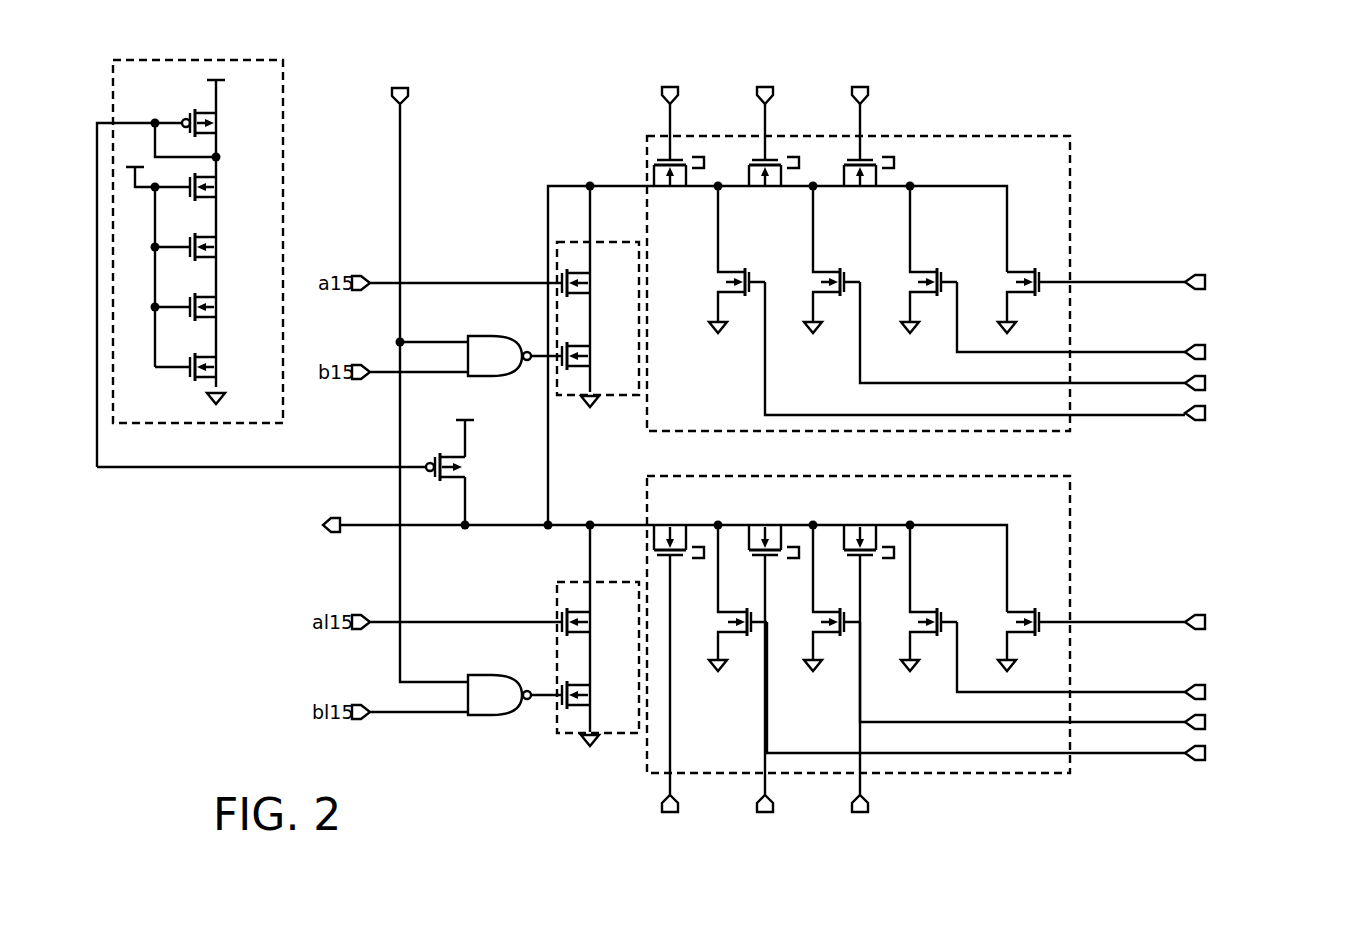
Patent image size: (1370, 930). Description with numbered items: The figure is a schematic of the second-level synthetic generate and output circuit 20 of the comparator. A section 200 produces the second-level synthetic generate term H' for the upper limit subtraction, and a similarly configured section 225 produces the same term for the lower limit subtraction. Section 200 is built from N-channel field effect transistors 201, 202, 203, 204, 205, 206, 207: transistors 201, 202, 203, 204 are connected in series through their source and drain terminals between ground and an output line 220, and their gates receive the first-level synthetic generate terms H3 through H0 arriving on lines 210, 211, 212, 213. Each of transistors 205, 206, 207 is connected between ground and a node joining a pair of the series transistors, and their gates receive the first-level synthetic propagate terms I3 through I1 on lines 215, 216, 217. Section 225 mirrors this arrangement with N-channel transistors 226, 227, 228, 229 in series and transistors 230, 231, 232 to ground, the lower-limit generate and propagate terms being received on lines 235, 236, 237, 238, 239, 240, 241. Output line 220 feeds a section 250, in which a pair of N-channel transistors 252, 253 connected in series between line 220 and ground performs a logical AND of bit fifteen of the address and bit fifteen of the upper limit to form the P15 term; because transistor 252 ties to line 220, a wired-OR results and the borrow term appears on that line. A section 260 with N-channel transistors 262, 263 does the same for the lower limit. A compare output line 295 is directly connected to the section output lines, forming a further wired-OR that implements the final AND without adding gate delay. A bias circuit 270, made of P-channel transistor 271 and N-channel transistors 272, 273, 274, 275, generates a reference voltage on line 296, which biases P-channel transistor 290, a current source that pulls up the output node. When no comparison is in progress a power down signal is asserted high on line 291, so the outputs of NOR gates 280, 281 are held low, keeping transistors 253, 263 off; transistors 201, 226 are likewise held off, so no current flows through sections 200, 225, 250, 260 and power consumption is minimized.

The second-level synthetic generate and output circuit 20 is at (1072, 100).
The section 200 is at (1072, 186).
The N-channel field effect transistor 201 is at (681, 192).
The N-channel field effect transistor 202 is at (776, 192).
The N-channel field effect transistor 203 is at (871, 192).
The N-channel field effect transistor 204 is at (1020, 282).
The N-channel field effect transistor 205 is at (730, 282).
The N-channel field effect transistor 206 is at (825, 282).
The N-channel field effect transistor 207 is at (922, 282).
The line 210 is at (672, 128).
The line 211 is at (767, 128).
The line 212 is at (862, 128).
The line 213 is at (1097, 285).
The line 215 is at (1097, 416).
The line 216 is at (1097, 386).
The line 217 is at (1097, 355).
The output line 220 is at (627, 184).
The section 225 is at (1072, 525).
The N-channel field effect transistor 226 is at (673, 524).
The N-channel field effect transistor 227 is at (768, 524).
The N-channel field effect transistor 228 is at (863, 524).
The N-channel field effect transistor 229 is at (1010, 611).
The N-channel field effect transistor 230 is at (721, 611).
The N-channel field effect transistor 231 is at (816, 611).
The N-channel field effect transistor 232 is at (913, 611).
The line 235 is at (674, 798).
The line 236 is at (769, 798).
The line 237 is at (864, 798).
The line 238 is at (1097, 625).
The line 239 is at (1097, 756).
The line 240 is at (1097, 725).
The line 241 is at (1097, 695).
The section 250 is at (562, 398).
The N-channel field effect transistor 252 is at (588, 281).
The N-channel field effect transistor 253 is at (588, 355).
The section 260 is at (562, 737).
The N-channel field effect transistor 262 is at (588, 620).
The N-channel field effect transistor 263 is at (588, 693).
The bias circuit 270 is at (133, 426).
The P-channel field effect transistor 271 is at (219, 121).
The N-channel field effect transistor 272 is at (219, 185).
The N-channel field effect transistor 273 is at (219, 245).
The N-channel field effect transistor 274 is at (219, 305).
The N-channel field effect transistor 275 is at (219, 365).
The NOR gate 280 is at (472, 338).
The NOR gate 281 is at (472, 678).
The P-channel field effect transistor 290 is at (471, 463).
The line 291 is at (402, 166).
The compare output line 295 is at (364, 528).
The line 296 is at (364, 466).